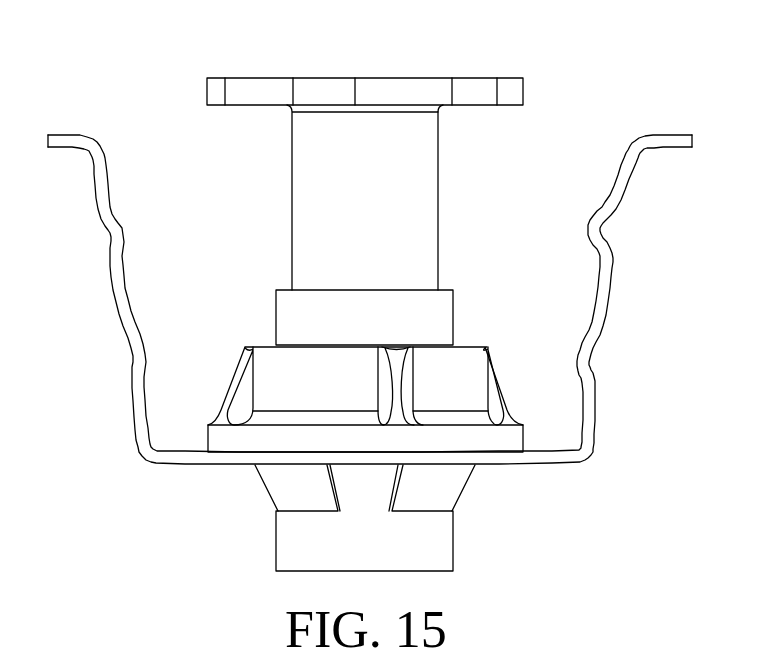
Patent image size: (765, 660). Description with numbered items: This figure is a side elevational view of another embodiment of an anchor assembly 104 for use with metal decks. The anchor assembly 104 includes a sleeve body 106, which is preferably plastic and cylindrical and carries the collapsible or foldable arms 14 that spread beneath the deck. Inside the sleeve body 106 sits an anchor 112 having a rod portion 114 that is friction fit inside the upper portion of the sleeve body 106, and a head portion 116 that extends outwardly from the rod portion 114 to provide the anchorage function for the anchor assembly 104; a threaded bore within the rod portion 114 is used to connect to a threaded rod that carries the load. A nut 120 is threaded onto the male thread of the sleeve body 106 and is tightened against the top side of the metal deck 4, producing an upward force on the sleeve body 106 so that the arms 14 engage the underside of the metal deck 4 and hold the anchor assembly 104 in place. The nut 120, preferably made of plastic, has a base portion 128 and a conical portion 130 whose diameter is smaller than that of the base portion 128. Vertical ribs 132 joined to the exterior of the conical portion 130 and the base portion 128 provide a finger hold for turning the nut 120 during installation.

The metal deck 4 is at (637, 182).
The collapsible or foldable arms 14 is at (262, 485).
The anchor assembly 104 is at (580, 101).
The sleeve body 106 is at (472, 537).
The anchor 112 is at (300, 172).
The rod portion 114 is at (438, 232).
The head portion 116 is at (474, 92).
The nut 120 is at (288, 392).
The base portion 128 is at (525, 440).
The conical portion 130 is at (467, 386).
The vertical ribs 132 is at (238, 378).